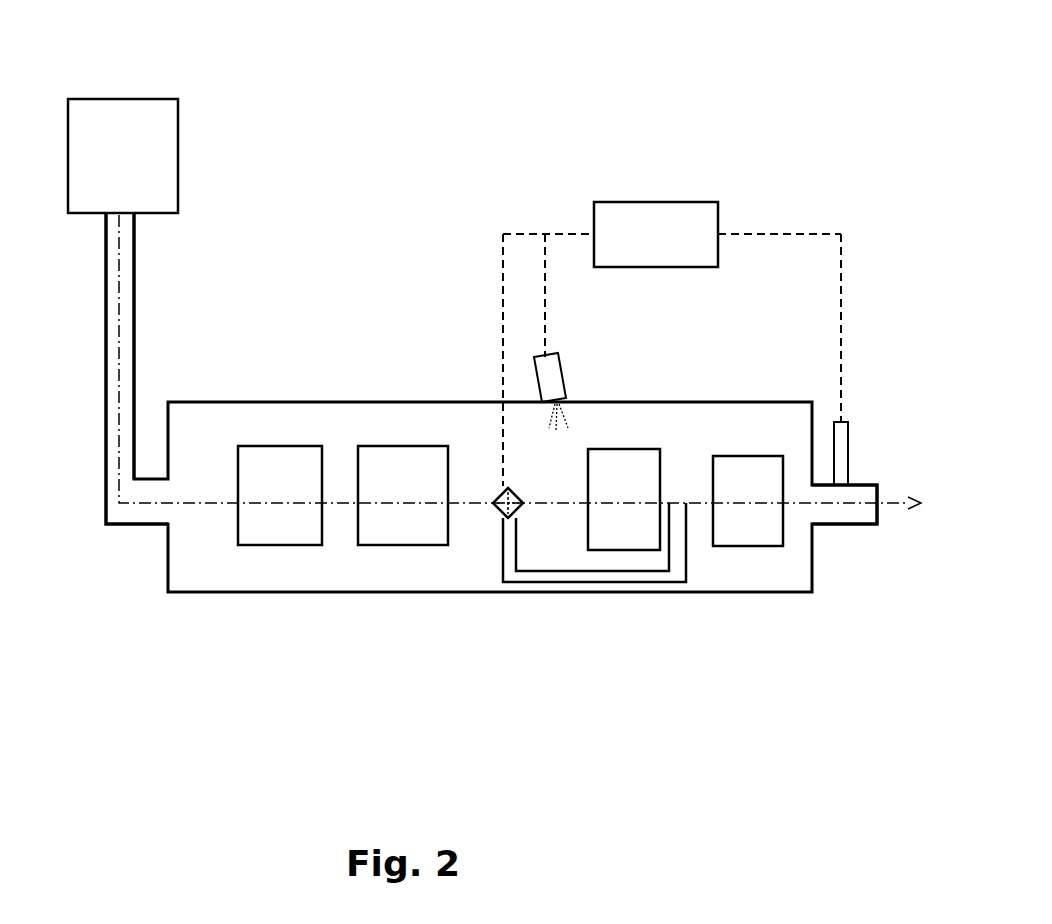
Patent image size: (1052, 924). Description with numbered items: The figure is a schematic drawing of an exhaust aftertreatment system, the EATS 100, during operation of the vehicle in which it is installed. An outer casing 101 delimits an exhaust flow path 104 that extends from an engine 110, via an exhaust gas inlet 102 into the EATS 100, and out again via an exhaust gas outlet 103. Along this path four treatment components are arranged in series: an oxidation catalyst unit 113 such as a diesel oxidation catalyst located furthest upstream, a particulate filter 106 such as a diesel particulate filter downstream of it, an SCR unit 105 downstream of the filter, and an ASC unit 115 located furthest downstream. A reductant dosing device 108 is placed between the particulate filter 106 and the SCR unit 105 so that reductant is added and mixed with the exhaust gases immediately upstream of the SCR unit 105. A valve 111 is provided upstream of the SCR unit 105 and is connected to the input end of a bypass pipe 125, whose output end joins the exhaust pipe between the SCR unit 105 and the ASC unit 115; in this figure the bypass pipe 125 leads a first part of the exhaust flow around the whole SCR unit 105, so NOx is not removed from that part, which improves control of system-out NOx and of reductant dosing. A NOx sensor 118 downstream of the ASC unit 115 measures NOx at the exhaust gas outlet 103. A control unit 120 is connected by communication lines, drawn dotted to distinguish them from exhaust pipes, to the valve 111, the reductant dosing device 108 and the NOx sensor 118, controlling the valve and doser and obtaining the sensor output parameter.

The EATS 100 is at (132, 706).
The outer casing 101 is at (253, 400).
The exhaust gas inlet 102 is at (112, 215).
The exhaust gas outlet 103 is at (879, 484).
The exhaust flow path 104 is at (160, 508).
The SCR unit 105 is at (618, 455).
The particulate filter 106 is at (404, 541).
The reductant dosing device 108 is at (562, 379).
The engine 110 is at (132, 98).
The valve 111 is at (501, 485).
The oxidation catalyst unit 113 is at (276, 541).
The ASC unit 115 is at (732, 455).
The NOx sensor 118 is at (842, 435).
The control unit 120 is at (650, 226).
The bypass pipe 125 is at (568, 577).